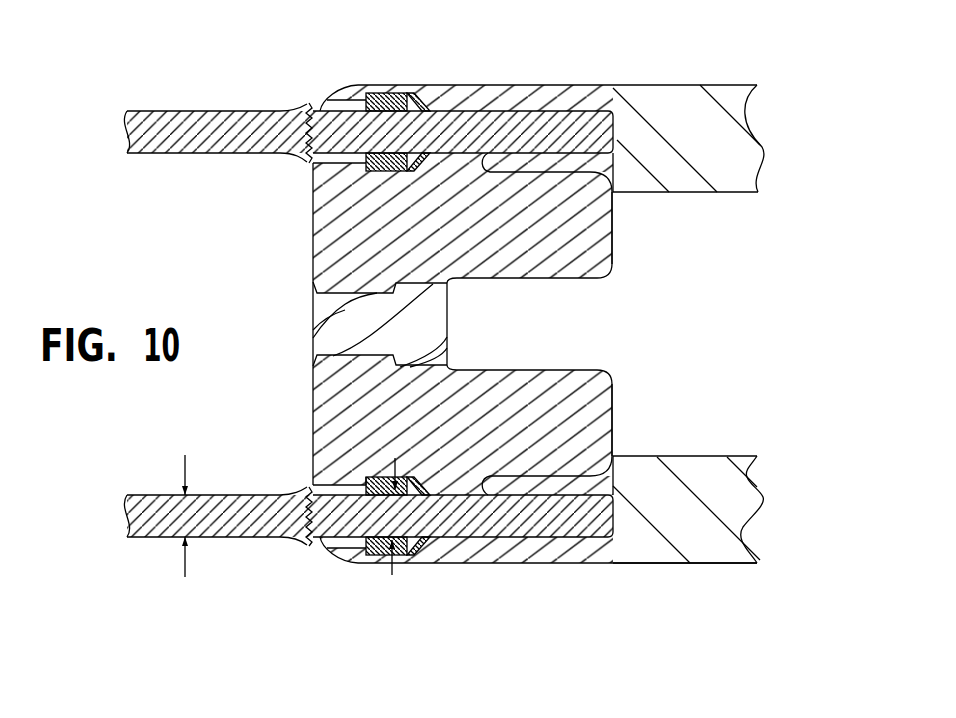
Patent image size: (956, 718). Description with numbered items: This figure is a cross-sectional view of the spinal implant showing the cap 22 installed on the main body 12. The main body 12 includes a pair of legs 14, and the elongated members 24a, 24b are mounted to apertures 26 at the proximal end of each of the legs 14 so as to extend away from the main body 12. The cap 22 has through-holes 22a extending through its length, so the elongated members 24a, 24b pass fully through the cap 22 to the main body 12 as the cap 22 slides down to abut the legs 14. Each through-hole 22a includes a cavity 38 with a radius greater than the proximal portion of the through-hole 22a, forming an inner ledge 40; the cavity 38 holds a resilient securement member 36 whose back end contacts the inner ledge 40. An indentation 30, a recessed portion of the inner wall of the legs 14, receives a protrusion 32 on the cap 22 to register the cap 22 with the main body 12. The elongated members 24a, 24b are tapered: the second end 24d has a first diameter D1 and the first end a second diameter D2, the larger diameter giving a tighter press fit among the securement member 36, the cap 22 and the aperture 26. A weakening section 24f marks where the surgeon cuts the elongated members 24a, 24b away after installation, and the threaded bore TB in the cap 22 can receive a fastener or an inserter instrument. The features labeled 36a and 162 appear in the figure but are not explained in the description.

The main body 12 is at (720, 342).
The legs 14 is at (718, 92).
The cap 22 is at (325, 245).
The through-hole 22a is at (333, 108).
The elongated member 24a is at (152, 113).
The elongated member 24b is at (158, 515).
The second end 24d is at (463, 120).
The weakening section 24f is at (300, 105).
The apertures 26 is at (538, 121).
The indentation 30 is at (590, 178).
The protrusions 32 is at (590, 210).
The securement members 36 is at (387, 100).
The ring portion 36a is at (398, 562).
The cavity 38 is at (413, 93).
The inner ledge 40 is at (353, 86).
The recess 162 is at (366, 476).
The threaded bore TB is at (319, 303).
The first diameter D1 is at (184, 507).
The second diameter D2 is at (394, 507).